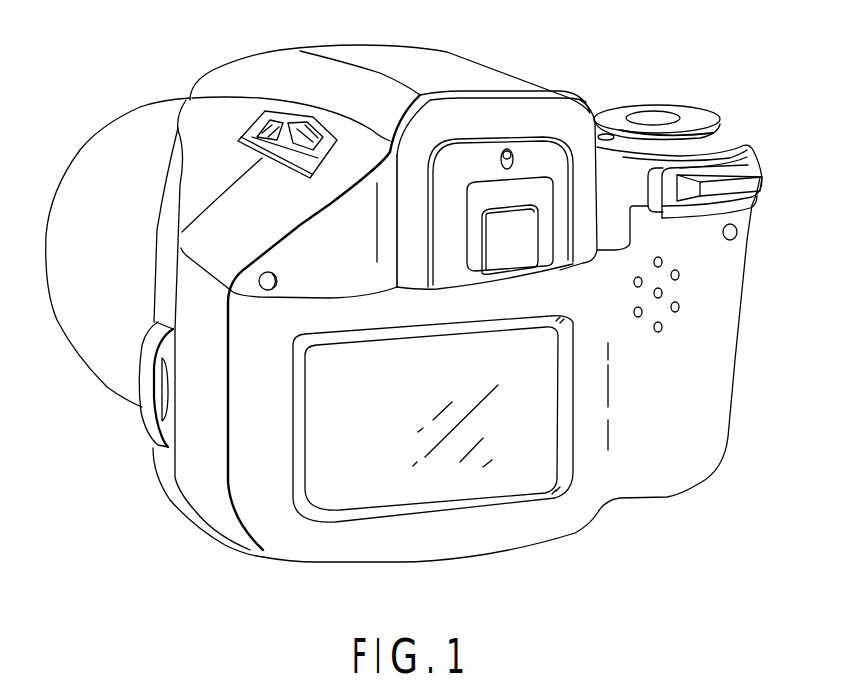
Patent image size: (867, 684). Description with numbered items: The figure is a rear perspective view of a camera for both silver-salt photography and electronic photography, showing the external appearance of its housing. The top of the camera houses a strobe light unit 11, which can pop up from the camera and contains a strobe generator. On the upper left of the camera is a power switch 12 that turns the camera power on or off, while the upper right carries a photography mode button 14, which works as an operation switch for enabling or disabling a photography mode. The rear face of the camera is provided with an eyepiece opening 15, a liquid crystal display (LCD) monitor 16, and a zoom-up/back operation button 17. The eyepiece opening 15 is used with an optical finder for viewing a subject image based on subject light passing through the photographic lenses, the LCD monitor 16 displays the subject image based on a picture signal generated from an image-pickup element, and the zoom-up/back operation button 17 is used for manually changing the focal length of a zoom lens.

The strobe light unit 11 is at (254, 56).
The power switch 12 is at (252, 125).
The photography mode button 14 is at (695, 115).
The eyepiece opening 15 is at (522, 262).
The liquid crystal display (LCD) monitor 16 is at (323, 520).
The zoom-up/back operation button 17 is at (761, 183).